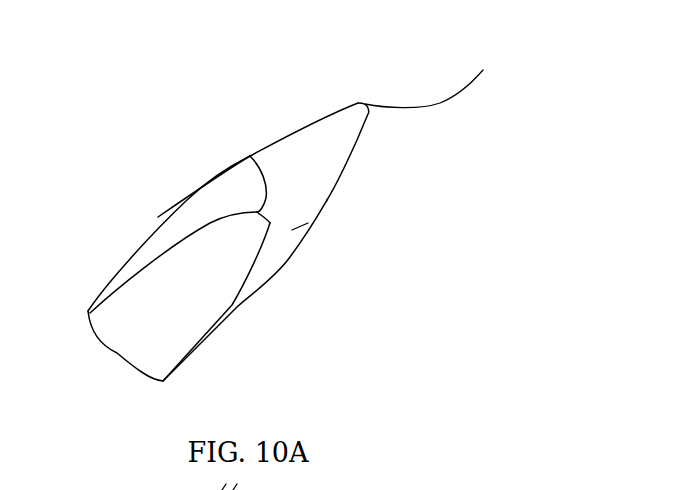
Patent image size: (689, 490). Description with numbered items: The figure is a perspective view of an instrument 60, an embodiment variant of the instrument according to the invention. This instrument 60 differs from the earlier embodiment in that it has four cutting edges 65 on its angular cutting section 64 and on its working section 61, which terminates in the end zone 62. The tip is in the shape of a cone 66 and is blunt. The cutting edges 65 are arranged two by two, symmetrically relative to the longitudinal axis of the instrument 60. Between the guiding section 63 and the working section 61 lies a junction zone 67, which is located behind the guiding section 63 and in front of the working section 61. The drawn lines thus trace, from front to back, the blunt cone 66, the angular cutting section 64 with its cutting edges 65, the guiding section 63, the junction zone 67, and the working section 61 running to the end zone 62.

The instrument 60 is at (217, 337).
The working section 61 is at (116, 261).
The end zone 62 is at (300, 265).
The guiding section 63 is at (305, 135).
The angular cutting section 64 is at (203, 163).
The cutting edges 65 is at (157, 216).
The cone 66 is at (446, 76).
The junction zone 67 is at (250, 192).